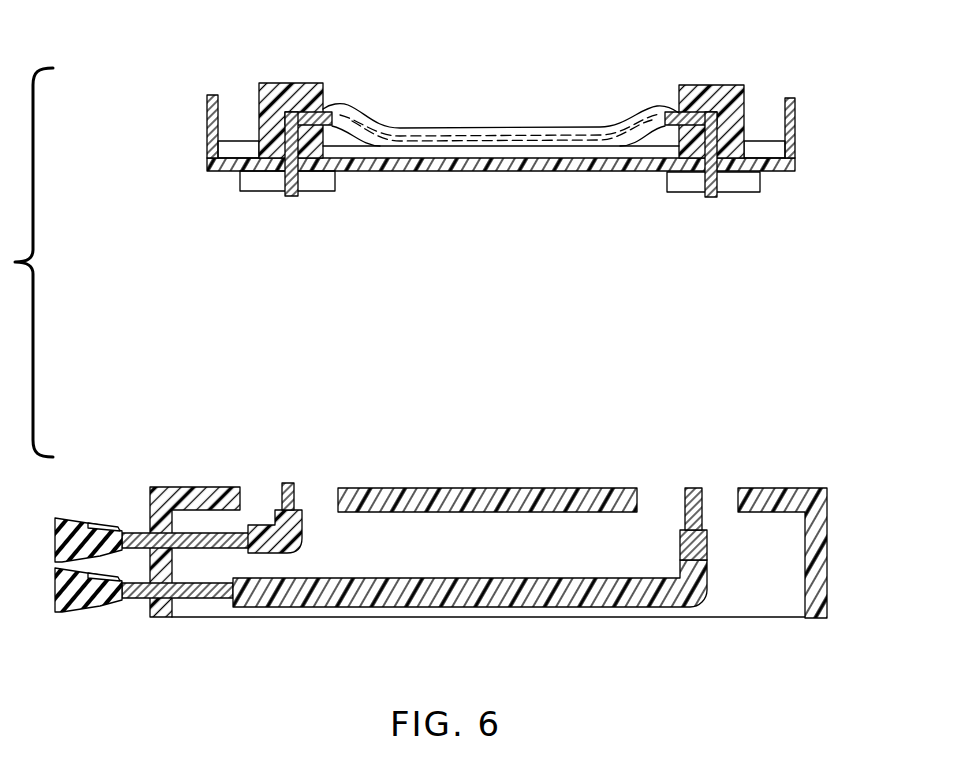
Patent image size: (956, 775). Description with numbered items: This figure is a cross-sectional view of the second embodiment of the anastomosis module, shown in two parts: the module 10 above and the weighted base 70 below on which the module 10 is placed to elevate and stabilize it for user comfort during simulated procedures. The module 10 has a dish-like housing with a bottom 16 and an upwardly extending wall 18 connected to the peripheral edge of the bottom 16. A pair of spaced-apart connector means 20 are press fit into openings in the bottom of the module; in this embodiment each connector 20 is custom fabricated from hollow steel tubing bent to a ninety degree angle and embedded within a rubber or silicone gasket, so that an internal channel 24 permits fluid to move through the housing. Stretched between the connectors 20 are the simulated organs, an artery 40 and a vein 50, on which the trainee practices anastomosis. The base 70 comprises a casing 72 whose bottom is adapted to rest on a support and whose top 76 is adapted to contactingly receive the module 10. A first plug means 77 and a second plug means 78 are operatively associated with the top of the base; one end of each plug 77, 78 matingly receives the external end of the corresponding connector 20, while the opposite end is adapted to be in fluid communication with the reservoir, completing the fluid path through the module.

The module 10 is at (503, 156).
The bottom 16 is at (510, 172).
The wall 18 is at (207, 123).
The connector means 20 is at (265, 83).
The internal channel 24 is at (295, 196).
The artery 40 is at (387, 122).
The vein 50 is at (620, 130).
The weighted base 70 is at (491, 576).
The casing 72 is at (827, 570).
The top 76 is at (467, 488).
The first plug means 77 is at (293, 523).
The second plug means 78 is at (697, 602).